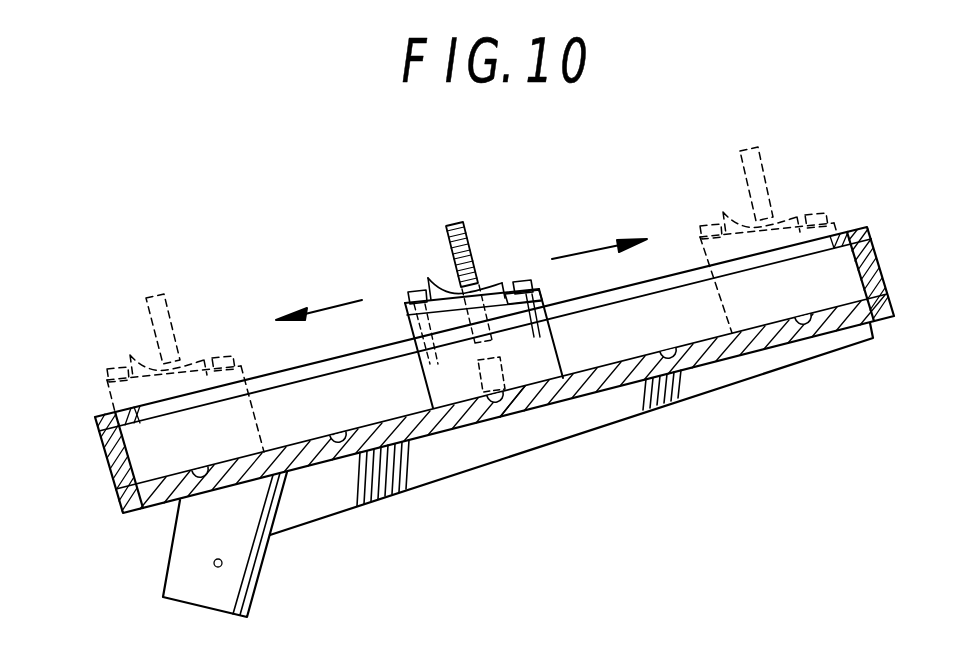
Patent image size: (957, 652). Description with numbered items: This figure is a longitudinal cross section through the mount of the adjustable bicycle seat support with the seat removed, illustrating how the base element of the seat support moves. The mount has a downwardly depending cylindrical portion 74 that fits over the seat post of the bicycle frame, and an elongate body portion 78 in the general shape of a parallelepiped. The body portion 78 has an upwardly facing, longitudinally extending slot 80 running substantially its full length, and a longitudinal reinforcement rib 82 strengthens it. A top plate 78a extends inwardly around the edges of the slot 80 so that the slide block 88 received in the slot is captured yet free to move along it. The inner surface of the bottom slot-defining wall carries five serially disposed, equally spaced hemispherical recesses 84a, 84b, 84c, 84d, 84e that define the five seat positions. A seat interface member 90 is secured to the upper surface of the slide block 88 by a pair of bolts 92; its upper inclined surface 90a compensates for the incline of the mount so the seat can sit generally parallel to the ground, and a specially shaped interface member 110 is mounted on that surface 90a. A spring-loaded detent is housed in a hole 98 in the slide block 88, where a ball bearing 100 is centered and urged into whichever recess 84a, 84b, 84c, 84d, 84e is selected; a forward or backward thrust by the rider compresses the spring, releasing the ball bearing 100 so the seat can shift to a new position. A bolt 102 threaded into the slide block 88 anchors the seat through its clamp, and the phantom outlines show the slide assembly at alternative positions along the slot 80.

The cylindrical portion 74 is at (223, 585).
The body portion 78 is at (622, 374).
The top plate 78a is at (96, 421).
The slot 80 is at (349, 478).
The reinforcement rib 82 is at (413, 477).
The hemispherical recess 84a is at (182, 493).
The hemispherical recess 84b is at (333, 440).
The hemispherical recess 84c is at (500, 412).
The hemispherical recess 84d is at (670, 357).
The hemispherical recess 84e is at (805, 324).
The slide block 88 is at (446, 383).
The seat interface member 90 is at (423, 318).
The upper inclined surface 90a is at (545, 303).
The bolts 92 is at (410, 293).
The hole 98 is at (505, 368).
The ball bearing 100 is at (505, 397).
The bolt 102 is at (448, 246).
The interface member 110 is at (495, 282).